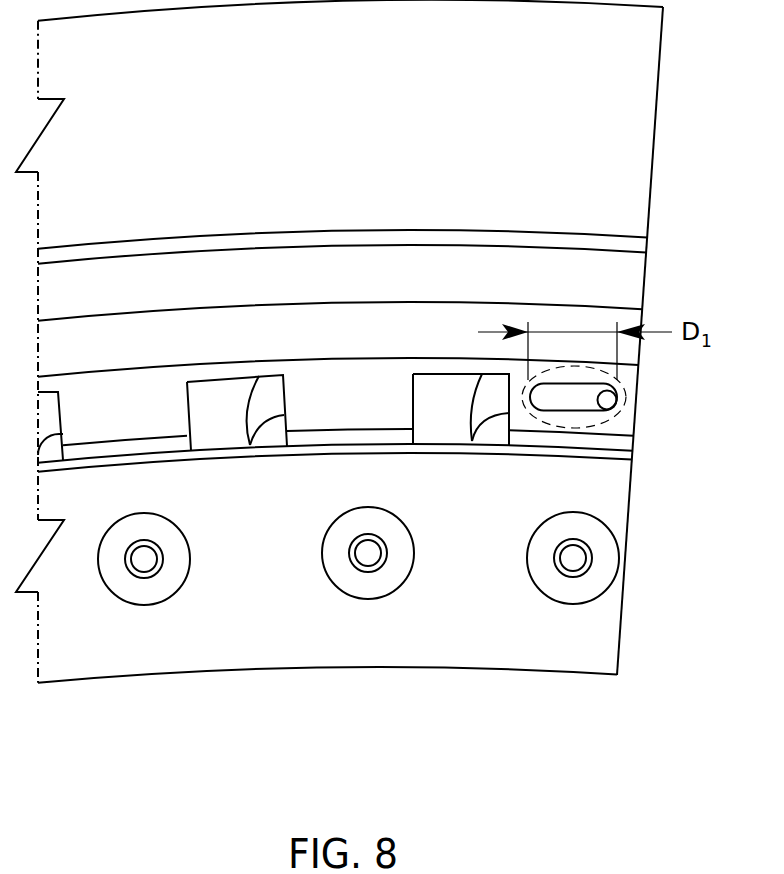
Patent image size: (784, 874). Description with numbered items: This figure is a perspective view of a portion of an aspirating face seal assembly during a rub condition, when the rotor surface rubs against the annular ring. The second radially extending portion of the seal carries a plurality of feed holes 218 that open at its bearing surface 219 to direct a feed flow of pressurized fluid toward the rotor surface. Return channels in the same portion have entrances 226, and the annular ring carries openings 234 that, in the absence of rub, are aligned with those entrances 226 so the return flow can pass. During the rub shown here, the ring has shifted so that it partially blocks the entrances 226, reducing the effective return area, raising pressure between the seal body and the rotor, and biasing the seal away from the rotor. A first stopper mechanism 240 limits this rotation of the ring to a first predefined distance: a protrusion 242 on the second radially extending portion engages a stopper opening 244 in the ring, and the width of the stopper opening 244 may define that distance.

The feed holes 218 is at (325, 568).
The bearing surface 219 is at (539, 655).
The entrance of return channel 226 is at (485, 430).
The openings 234 is at (412, 382).
The first stopper mechanism 240 is at (622, 409).
The protrusion 242 is at (618, 401).
The stopper opening 244 is at (567, 402).